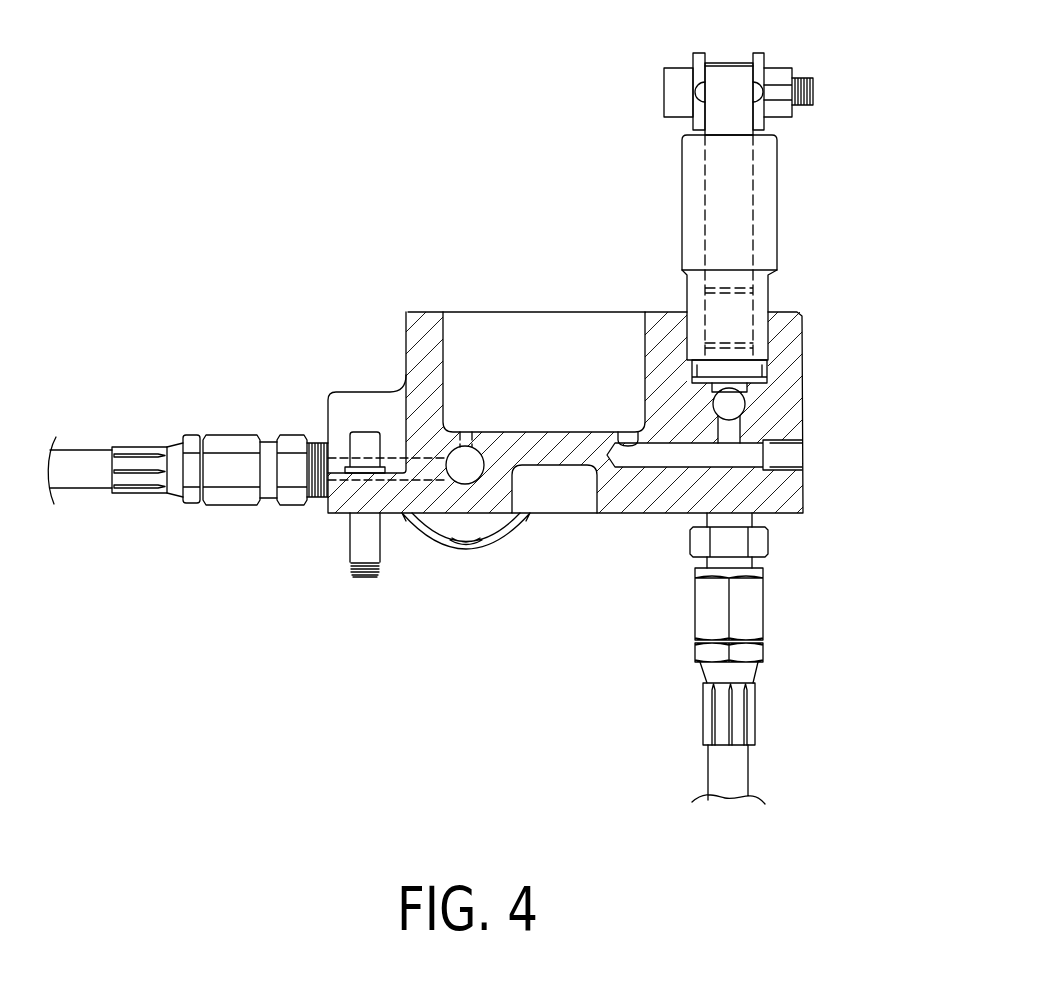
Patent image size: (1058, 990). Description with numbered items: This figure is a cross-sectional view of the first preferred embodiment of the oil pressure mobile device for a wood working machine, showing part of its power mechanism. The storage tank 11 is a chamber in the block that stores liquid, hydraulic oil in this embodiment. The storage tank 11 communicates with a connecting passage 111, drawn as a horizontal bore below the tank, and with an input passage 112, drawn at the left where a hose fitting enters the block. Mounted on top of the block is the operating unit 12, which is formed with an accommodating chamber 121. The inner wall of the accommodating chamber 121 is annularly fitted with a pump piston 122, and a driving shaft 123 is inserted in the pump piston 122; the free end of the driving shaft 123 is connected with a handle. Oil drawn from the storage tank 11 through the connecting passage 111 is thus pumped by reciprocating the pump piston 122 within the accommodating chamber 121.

The storage tank 11 is at (523, 335).
The connecting passage 111 is at (652, 458).
The input passage 112 is at (92, 465).
The operating unit 12 is at (775, 228).
The accommodating chamber 121 is at (760, 288).
The pump piston 122 is at (753, 327).
The driving shaft 123 is at (730, 118).